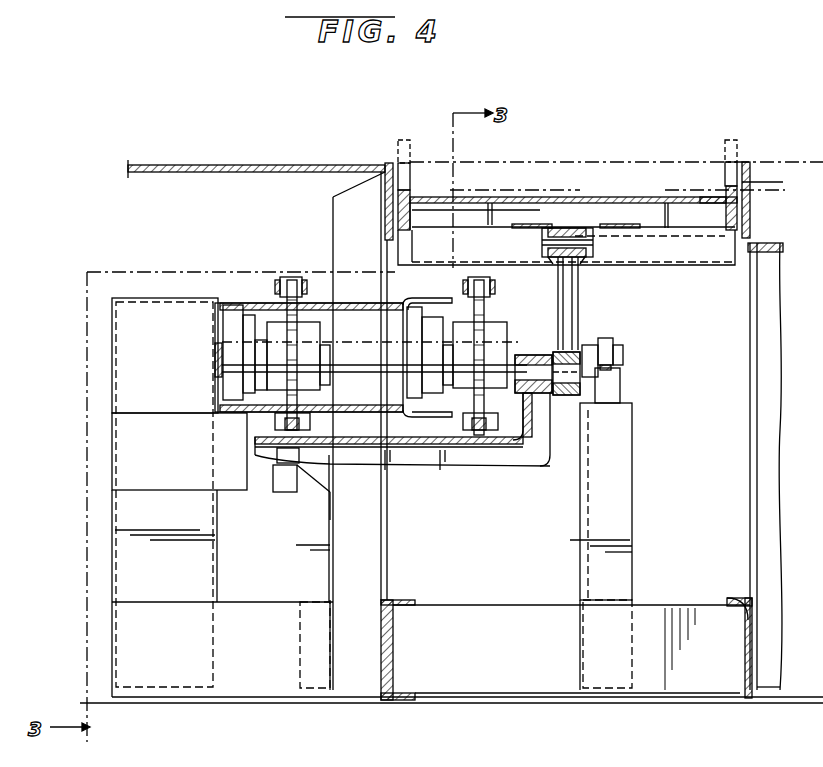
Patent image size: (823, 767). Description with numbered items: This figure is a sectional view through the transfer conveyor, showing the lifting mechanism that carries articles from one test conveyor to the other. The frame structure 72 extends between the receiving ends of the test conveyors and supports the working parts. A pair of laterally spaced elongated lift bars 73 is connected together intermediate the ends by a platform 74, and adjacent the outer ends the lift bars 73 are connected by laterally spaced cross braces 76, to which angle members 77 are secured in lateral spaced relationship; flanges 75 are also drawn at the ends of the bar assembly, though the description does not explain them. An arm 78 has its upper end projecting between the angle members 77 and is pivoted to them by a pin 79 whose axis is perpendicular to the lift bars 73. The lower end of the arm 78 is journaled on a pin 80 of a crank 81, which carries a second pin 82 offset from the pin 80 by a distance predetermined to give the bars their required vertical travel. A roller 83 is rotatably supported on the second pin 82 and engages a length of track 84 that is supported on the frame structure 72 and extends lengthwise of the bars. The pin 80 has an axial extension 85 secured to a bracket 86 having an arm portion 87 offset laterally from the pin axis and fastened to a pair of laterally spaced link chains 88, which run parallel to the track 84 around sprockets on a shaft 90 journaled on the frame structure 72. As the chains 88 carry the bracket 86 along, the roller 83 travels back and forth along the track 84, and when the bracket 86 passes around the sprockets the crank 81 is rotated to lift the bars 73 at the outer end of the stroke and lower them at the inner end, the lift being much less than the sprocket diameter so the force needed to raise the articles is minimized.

The frame structure 72 is at (388, 578).
The lift bars 73 is at (403, 218).
The platform 74 is at (655, 198).
The flange 75 is at (392, 170).
The cross braces 76 is at (676, 214).
The angle members 77 is at (555, 260).
The arm 78 is at (578, 310).
The pin 79 is at (543, 243).
The pin 80 is at (562, 390).
The crank 81 is at (590, 350).
The second pin 82 is at (622, 354).
The roller 83 is at (606, 342).
The track 84 is at (615, 390).
The axial extension 85 is at (530, 358).
The bracket 86 is at (537, 462).
The arm portion 87 is at (436, 466).
The link chains 88 is at (280, 290).
The shaft 90 is at (355, 352).